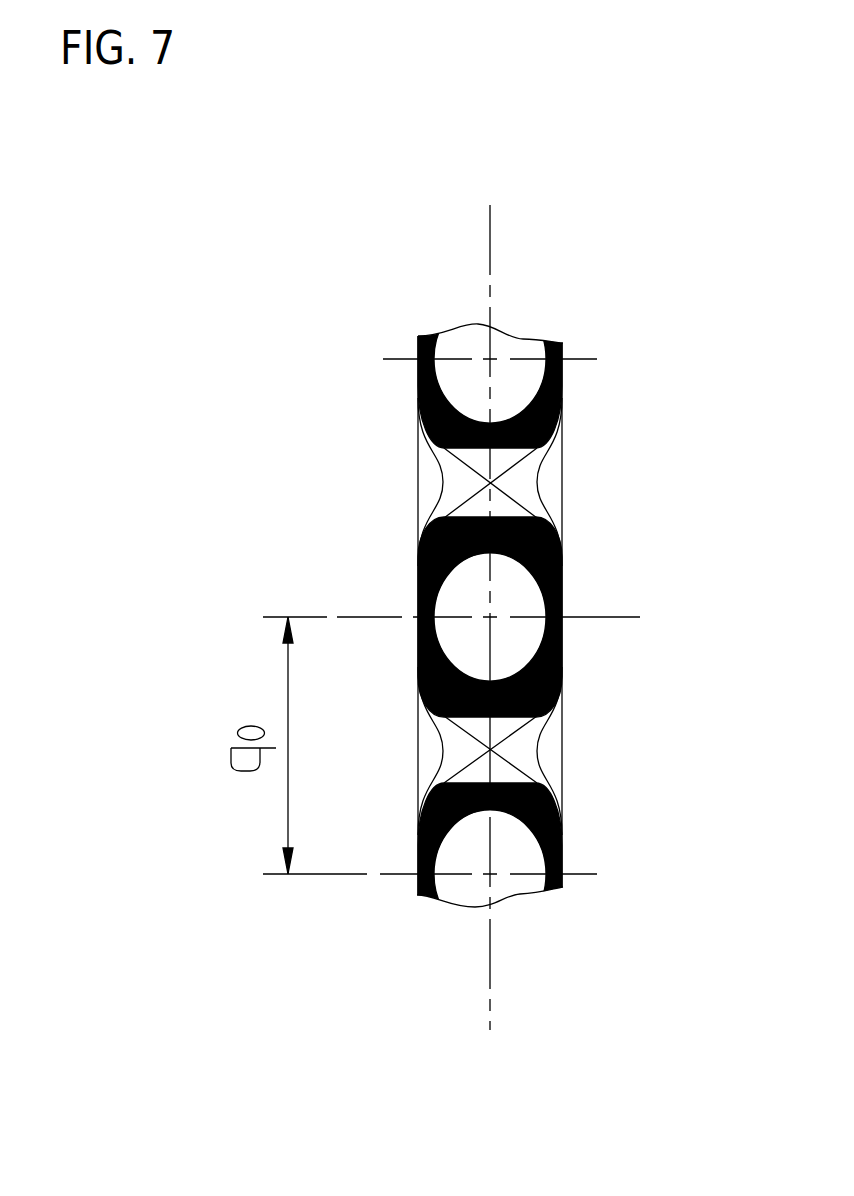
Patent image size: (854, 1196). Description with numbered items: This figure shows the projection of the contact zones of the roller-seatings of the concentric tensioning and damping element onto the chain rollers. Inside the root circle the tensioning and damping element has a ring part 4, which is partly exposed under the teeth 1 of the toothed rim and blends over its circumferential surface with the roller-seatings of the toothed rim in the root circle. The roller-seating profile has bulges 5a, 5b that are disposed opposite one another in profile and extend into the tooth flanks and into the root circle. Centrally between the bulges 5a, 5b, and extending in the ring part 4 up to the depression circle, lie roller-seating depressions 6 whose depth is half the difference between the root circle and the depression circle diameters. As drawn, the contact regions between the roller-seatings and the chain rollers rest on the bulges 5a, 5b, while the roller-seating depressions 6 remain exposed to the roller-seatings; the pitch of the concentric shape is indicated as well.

The teeth 1 is at (490, 751).
The ring part 4 is at (547, 478).
The bulge 5a is at (432, 556).
The bulge 5b is at (552, 555).
The roller-seating depression 6 is at (503, 642).